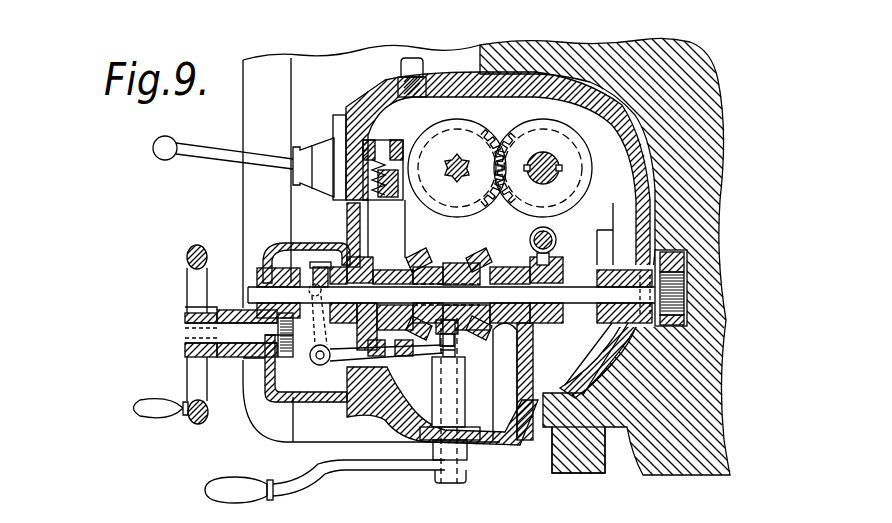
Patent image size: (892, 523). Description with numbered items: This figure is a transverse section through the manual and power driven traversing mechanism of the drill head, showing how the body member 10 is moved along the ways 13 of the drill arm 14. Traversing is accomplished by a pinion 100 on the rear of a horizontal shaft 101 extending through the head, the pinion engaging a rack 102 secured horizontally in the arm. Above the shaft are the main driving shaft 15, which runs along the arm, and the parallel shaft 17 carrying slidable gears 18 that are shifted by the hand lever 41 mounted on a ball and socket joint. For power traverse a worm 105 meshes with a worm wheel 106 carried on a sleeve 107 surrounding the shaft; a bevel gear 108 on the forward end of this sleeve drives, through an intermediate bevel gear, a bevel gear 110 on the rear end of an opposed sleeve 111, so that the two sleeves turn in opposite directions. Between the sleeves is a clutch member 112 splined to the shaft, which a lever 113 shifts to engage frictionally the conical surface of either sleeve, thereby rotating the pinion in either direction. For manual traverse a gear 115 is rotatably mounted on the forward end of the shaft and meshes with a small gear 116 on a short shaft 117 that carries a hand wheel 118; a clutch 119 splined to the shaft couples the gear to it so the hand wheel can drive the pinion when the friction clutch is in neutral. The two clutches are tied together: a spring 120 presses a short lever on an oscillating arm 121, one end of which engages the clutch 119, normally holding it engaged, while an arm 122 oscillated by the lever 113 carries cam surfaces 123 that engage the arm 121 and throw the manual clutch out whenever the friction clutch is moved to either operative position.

The body member 10 is at (513, 440).
The ways 13 is at (485, 55).
The drill arm 14 is at (693, 450).
The main driving shaft 15 is at (543, 158).
The shaft 17 is at (447, 157).
The pair of slidable gears 18 is at (491, 146).
The hand lever 41 is at (206, 149).
The pinion 100 is at (685, 285).
The horizontal shaft 101 is at (588, 290).
The rack 102 is at (672, 262).
The worm 105 is at (556, 243).
The worm wheel 106 is at (530, 328).
The sleeve 107 is at (497, 333).
The bevel gear 108 is at (465, 260).
The bevel gear 110 is at (424, 262).
The sleeve 111 is at (374, 270).
The clutch member 112 is at (423, 348).
The lever 113 is at (383, 463).
The gear 115 is at (285, 267).
The small gear 116 is at (268, 364).
The short shaft 117 is at (227, 333).
The hand wheel 118 is at (188, 257).
The clutch 119 is at (319, 262).
The spring 120 is at (307, 345).
The oscillating arm 121 is at (338, 357).
The arm 122 is at (445, 380).
The cam surfaces 123 is at (403, 321).